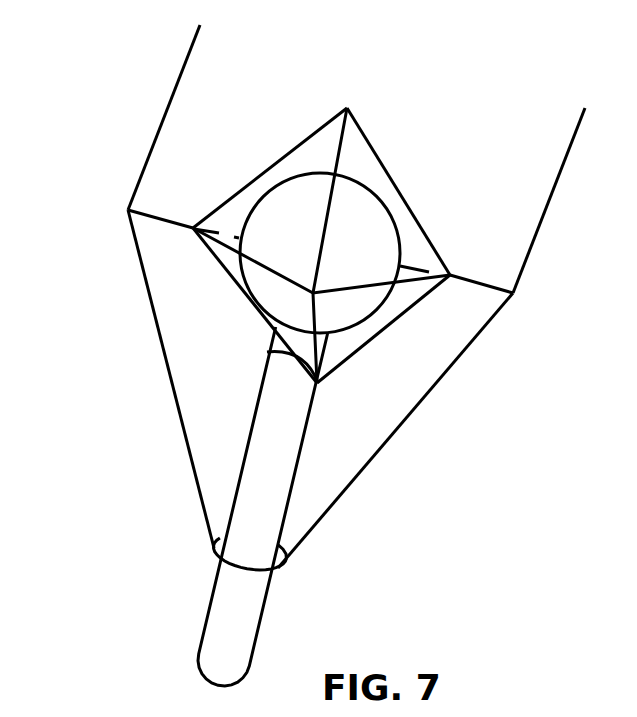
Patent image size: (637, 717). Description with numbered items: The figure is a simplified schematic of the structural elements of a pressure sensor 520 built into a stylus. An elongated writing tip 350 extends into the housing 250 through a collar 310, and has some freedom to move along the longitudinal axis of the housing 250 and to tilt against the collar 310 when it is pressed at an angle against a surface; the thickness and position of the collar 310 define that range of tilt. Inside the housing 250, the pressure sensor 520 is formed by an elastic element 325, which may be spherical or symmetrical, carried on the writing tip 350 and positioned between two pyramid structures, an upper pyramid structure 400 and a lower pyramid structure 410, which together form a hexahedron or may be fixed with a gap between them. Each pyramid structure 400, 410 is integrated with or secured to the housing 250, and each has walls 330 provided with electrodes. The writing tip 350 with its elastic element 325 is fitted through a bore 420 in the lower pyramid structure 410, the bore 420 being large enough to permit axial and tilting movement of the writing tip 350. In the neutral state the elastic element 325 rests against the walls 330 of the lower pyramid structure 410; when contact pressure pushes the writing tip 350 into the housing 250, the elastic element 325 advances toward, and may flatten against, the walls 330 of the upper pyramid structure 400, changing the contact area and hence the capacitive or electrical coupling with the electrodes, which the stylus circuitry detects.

The housing 250 is at (182, 432).
The collar 310 is at (238, 575).
The elastic element 325 is at (280, 233).
The walls 330 is at (253, 180).
The writing tip 350 is at (205, 657).
The pyramid structure 400 is at (334, 254).
The pyramid structure 410 is at (383, 342).
The bore 420 is at (283, 379).
The pressure sensor 520 is at (96, 172).